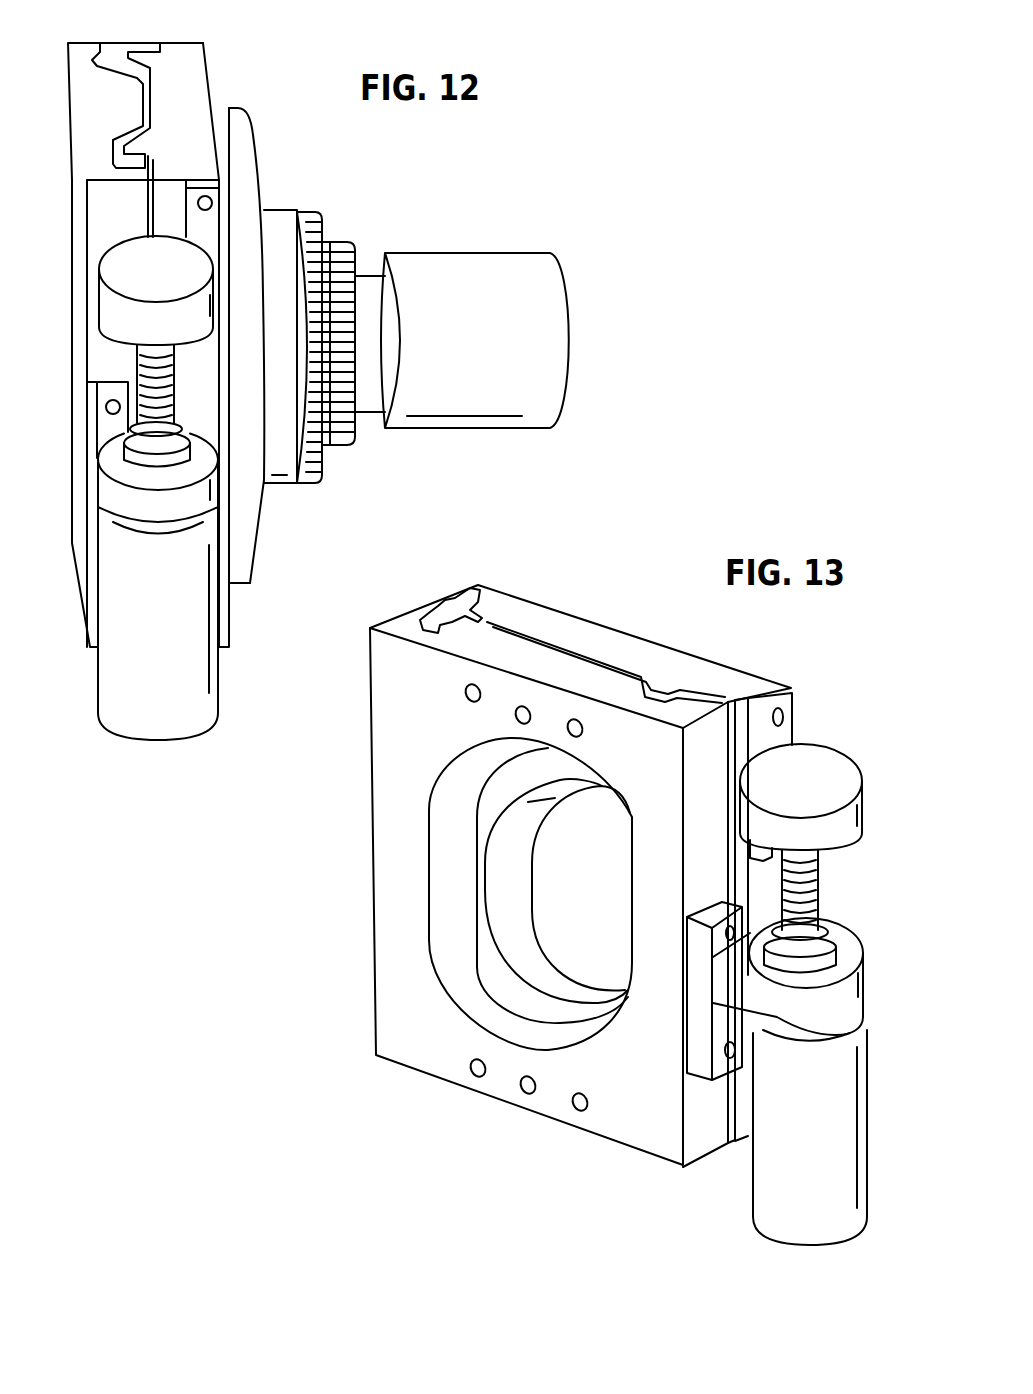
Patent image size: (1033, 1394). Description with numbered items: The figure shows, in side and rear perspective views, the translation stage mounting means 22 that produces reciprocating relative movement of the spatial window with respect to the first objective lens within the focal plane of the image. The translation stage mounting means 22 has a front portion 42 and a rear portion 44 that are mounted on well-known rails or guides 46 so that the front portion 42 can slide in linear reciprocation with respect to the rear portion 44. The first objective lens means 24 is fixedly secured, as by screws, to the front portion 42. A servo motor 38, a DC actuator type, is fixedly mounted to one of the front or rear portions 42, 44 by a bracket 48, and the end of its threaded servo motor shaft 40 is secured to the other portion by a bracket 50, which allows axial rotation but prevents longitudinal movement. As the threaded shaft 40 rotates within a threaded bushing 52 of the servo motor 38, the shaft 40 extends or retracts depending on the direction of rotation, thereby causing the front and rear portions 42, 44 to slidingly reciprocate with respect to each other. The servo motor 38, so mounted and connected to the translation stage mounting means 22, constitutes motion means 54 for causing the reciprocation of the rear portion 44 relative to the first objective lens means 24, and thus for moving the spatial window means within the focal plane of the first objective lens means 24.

In FIG. 12, the translation stage mounting means 22 is at (213, 43).
In FIG. 13, the translation stage mounting means 22 is at (774, 677).
In FIG. 12, the first objective lens means 24 is at (436, 252).
In FIG. 12, the servo motor 38 is at (123, 688).
In FIG. 13, the servo motor 38 is at (838, 1167).
In FIG. 12, the servo motor shaft 40 is at (143, 375).
In FIG. 13, the servo motor shaft 40 is at (817, 897).
In FIG. 12, the front portion 42 is at (195, 75).
In FIG. 13, the front portion 42 is at (605, 642).
In FIG. 12, the rear portion 44 is at (105, 14).
In FIG. 13, the rear portion 44 is at (381, 1015).
In FIG. 12, the rails or guides 46 is at (135, 145).
In FIG. 13, the rails or guides 46 is at (477, 622).
In FIG. 12, the bracket 48 is at (110, 494).
In FIG. 13, the bracket 48 is at (860, 980).
In FIG. 12, the bracket 50 is at (110, 308).
In FIG. 13, the bracket 50 is at (832, 838).
In FIG. 12, the threaded bushing 52 is at (183, 437).
In FIG. 13, the threaded bushing 52 is at (823, 942).
In FIG. 12, the motion means 54 is at (70, 502).
In FIG. 13, the motion means 54 is at (846, 749).